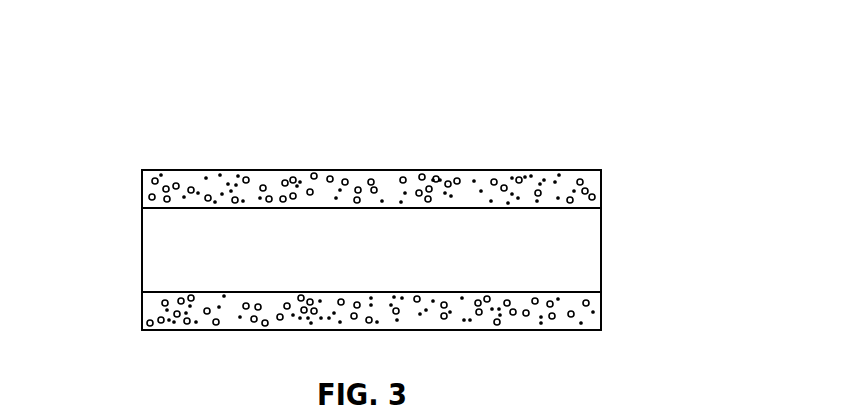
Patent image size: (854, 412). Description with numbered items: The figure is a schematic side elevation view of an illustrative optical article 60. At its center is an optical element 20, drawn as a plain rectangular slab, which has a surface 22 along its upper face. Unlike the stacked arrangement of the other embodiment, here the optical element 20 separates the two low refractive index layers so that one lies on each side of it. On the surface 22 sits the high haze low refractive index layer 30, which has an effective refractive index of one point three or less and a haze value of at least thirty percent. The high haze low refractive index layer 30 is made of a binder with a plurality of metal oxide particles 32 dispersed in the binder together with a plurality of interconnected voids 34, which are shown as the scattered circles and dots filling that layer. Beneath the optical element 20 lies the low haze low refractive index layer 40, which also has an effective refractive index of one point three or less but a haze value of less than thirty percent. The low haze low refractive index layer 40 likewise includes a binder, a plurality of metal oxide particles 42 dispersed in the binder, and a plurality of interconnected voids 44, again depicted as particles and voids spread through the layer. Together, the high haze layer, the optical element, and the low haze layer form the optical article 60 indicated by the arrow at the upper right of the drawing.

The optical article 60 is at (619, 85).
The optical element 20 is at (385, 262).
The high haze low refractive index layer 30 is at (257, 170).
The interconnected voids 34 is at (329, 176).
The metal oxide particles 32 is at (435, 176).
The surface 22 is at (517, 208).
The low haze low refractive index layer 40 is at (603, 310).
The interconnected voids 44 is at (142, 292).
The metal oxide particles 42 is at (148, 322).